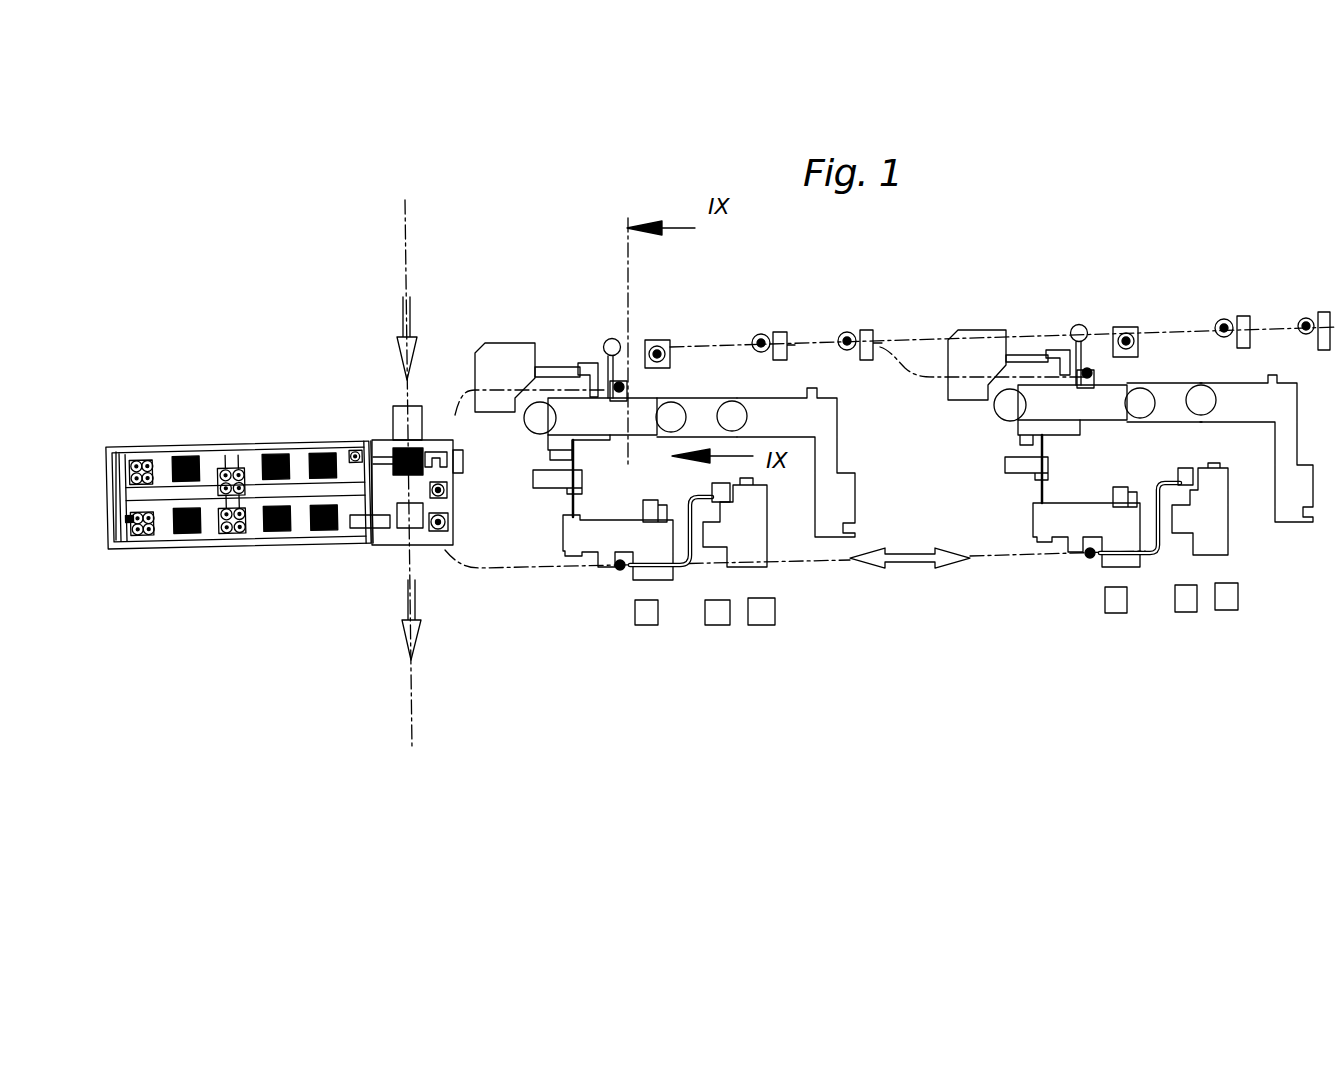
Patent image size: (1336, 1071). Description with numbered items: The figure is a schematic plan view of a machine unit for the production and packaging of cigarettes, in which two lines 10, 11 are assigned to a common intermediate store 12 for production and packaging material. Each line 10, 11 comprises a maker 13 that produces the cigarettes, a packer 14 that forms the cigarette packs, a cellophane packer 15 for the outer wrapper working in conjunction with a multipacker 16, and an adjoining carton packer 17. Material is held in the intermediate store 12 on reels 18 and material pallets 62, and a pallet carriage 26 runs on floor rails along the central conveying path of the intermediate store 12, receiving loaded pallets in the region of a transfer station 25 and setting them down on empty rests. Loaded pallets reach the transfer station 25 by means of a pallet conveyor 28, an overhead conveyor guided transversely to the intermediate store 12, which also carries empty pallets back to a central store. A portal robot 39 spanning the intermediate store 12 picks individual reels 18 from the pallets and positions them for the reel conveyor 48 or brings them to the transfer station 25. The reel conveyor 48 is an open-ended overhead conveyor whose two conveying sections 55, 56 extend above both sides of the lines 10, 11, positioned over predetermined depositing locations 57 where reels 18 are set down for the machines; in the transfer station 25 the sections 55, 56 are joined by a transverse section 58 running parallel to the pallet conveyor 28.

The line 10 is at (612, 612).
The line 11 is at (1086, 598).
The intermediate store 12 is at (221, 379).
The maker 13 is at (801, 380).
The packer 14 is at (574, 416).
The cellophane packer 15 is at (582, 537).
The multipacker 16 is at (660, 556).
The carton packer 17 is at (770, 525).
The reel 18 is at (1085, 557).
The transfer station 25 is at (378, 566).
The pallet carriage 26 is at (262, 434).
The pallet conveyor 28 is at (405, 230).
The portal robot 39 is at (140, 553).
The reel conveyor 48 is at (444, 590).
The conveying section 55 is at (500, 372).
The conveying section 56 is at (473, 575).
The depositing location 57 is at (662, 340).
The transverse section 58 is at (460, 390).
The material pallet 62 is at (327, 550).